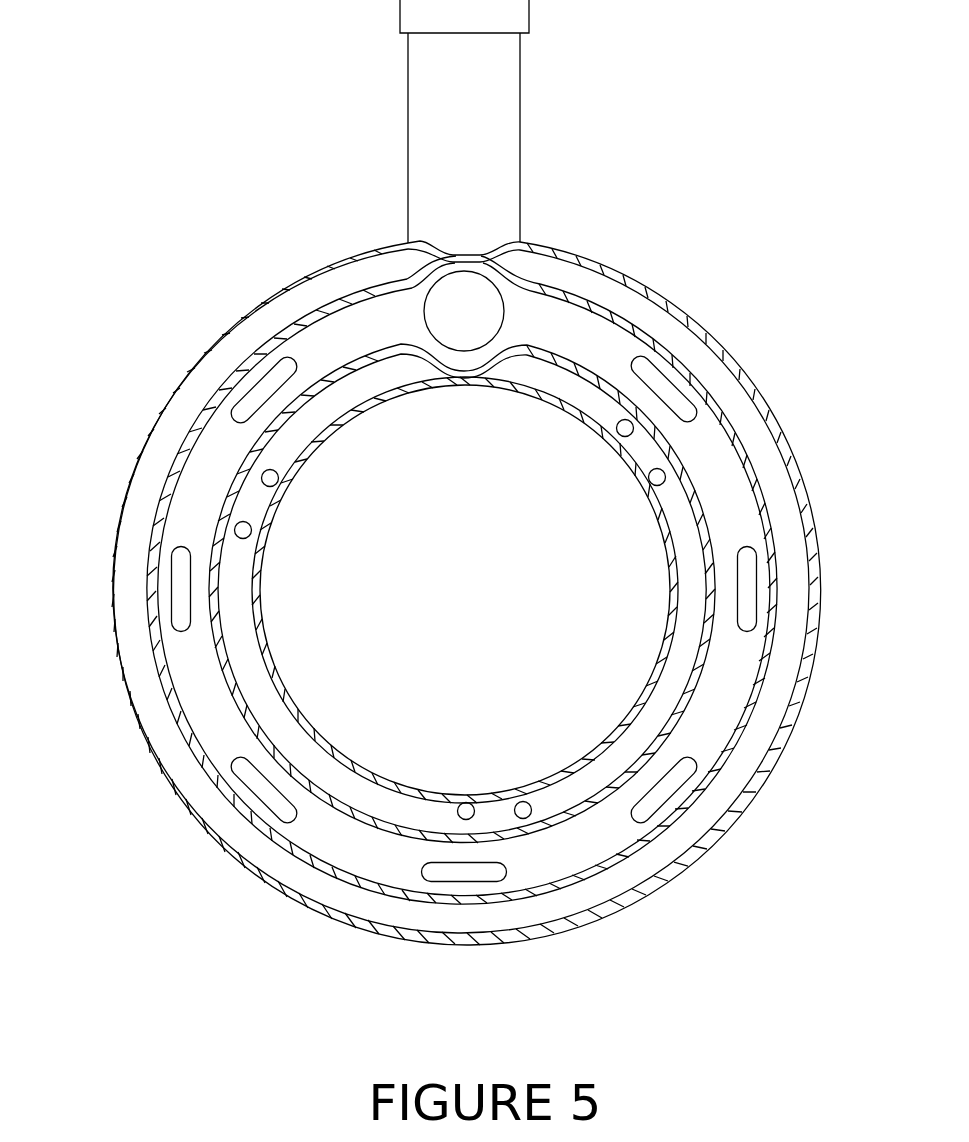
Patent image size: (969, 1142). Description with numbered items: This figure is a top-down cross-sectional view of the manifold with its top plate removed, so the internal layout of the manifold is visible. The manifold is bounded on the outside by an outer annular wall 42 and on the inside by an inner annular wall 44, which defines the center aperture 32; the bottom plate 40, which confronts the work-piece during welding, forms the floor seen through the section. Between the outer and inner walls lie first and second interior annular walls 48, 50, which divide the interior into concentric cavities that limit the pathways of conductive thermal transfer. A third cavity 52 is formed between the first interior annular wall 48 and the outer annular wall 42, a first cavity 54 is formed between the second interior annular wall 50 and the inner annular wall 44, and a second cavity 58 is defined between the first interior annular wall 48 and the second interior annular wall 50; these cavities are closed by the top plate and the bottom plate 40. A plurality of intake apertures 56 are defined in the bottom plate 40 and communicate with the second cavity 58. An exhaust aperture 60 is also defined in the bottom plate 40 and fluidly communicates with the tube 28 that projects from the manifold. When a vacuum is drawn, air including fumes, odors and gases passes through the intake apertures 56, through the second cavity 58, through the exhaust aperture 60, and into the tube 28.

The tube 28 is at (442, 152).
The center aperture 32 is at (673, 612).
The inner annular wall 44 is at (673, 612).
The bottom plate 40 is at (338, 900).
The outer annular wall 42 is at (663, 882).
The first interior annular wall 48 is at (537, 282).
The second interior annular wall 50 is at (540, 343).
The third cavity 52 is at (152, 707).
The first cavity 54 is at (575, 397).
The intake apertures 56 is at (250, 395).
The second cavity 58 is at (215, 478).
The exhaust aperture 60 is at (428, 316).